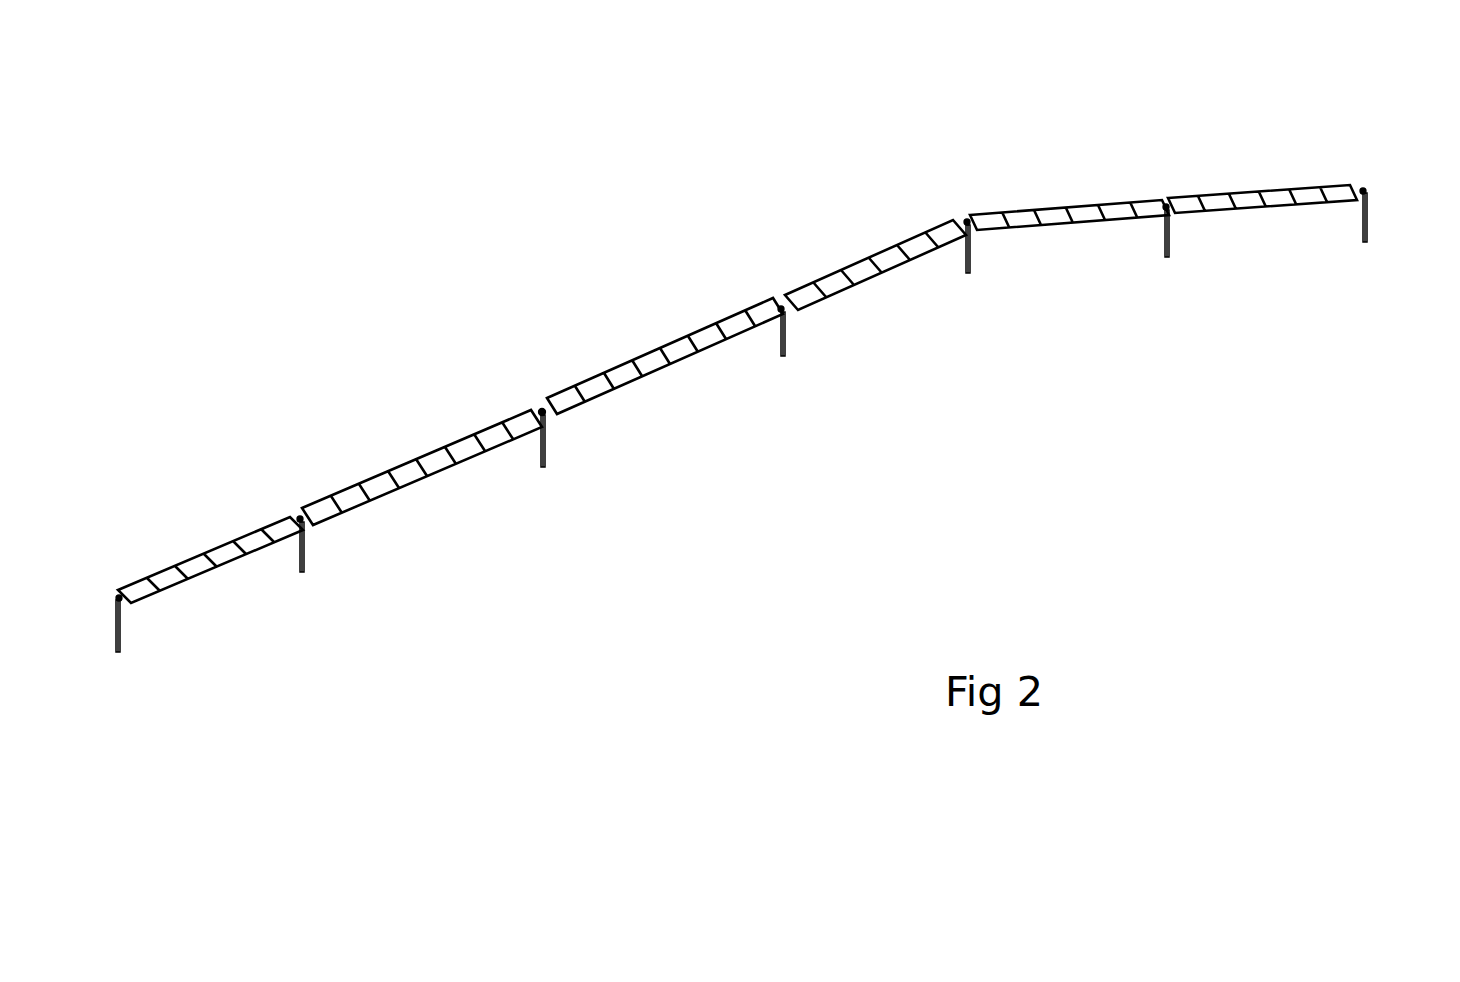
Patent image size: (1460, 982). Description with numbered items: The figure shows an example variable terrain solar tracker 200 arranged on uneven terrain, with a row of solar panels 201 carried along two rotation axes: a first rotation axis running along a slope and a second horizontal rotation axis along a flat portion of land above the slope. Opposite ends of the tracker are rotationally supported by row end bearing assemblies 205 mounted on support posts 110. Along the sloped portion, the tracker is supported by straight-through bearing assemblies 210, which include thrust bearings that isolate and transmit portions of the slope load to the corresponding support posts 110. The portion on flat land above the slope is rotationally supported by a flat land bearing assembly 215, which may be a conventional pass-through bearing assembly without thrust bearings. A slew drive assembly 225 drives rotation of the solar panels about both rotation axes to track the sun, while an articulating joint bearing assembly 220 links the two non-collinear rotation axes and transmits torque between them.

The variable terrain solar tracker 200 is at (857, 538).
The solar panel row 201 is at (463, 442).
The support post 110 is at (117, 637).
The row end bearing assembly 205 is at (135, 624).
The straight-through bearing assembly 210 is at (764, 286).
The flat land bearing assembly 215 is at (1150, 186).
The articulating joint bearing assembly 220 is at (986, 247).
The slew drive assembly 225 is at (563, 440).